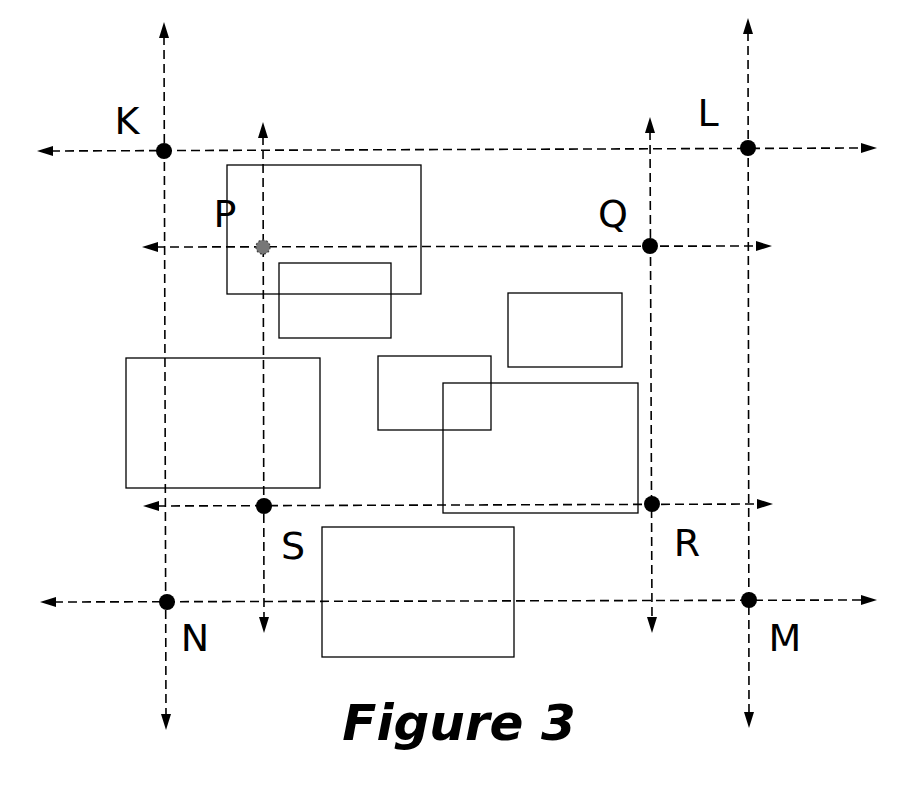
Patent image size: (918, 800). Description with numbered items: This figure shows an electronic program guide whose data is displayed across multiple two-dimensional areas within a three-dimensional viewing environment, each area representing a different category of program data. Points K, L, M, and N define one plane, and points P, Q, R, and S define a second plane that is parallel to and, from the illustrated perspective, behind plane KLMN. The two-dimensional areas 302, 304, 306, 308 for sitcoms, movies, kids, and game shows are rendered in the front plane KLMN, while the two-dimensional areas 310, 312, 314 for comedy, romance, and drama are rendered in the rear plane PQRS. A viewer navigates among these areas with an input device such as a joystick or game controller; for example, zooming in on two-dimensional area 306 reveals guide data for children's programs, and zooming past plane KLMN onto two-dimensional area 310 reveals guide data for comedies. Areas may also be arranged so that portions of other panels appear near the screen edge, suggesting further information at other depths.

The two-dimensional area 302 is at (371, 197).
The two-dimensional area 304 is at (272, 383).
The two-dimensional area 306 is at (589, 410).
The two-dimensional area 308 is at (464, 553).
The two-dimensional area 310 is at (289, 333).
The two-dimensional area 312 is at (519, 365).
The two-dimensional area 314 is at (389, 427).